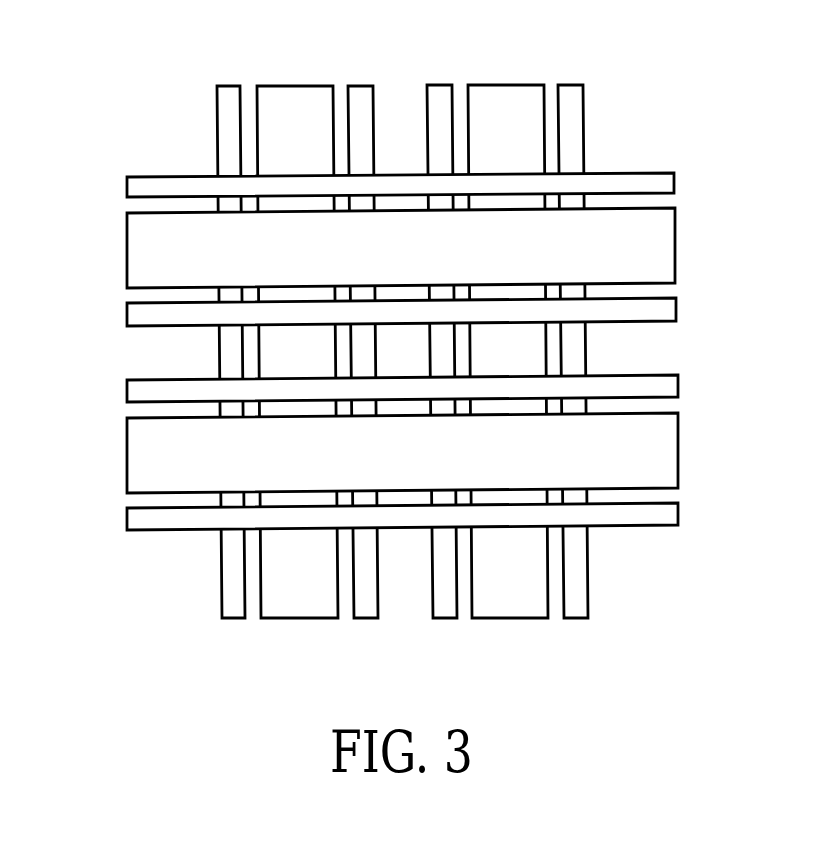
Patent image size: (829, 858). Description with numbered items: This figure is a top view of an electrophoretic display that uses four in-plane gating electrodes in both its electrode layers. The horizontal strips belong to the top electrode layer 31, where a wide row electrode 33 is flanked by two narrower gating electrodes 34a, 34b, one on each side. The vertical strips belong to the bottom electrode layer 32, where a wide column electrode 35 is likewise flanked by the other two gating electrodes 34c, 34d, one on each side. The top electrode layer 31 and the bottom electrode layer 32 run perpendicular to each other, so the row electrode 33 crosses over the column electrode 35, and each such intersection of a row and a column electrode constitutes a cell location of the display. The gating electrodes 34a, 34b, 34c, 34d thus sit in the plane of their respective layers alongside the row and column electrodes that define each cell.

The top electrode layer 31 is at (396, 253).
The bottom electrode layer 32 is at (292, 358).
The row electrode 33 is at (127, 257).
The gating electrode 34a is at (127, 184).
The gating electrode 34b is at (127, 313).
The gating electrode 34c is at (226, 86).
The gating electrode 34d is at (363, 86).
The column electrode 35 is at (286, 86).